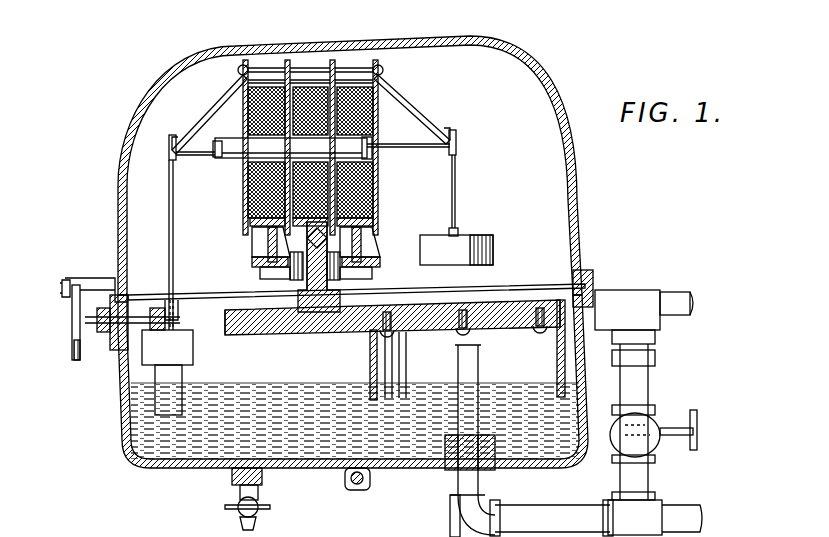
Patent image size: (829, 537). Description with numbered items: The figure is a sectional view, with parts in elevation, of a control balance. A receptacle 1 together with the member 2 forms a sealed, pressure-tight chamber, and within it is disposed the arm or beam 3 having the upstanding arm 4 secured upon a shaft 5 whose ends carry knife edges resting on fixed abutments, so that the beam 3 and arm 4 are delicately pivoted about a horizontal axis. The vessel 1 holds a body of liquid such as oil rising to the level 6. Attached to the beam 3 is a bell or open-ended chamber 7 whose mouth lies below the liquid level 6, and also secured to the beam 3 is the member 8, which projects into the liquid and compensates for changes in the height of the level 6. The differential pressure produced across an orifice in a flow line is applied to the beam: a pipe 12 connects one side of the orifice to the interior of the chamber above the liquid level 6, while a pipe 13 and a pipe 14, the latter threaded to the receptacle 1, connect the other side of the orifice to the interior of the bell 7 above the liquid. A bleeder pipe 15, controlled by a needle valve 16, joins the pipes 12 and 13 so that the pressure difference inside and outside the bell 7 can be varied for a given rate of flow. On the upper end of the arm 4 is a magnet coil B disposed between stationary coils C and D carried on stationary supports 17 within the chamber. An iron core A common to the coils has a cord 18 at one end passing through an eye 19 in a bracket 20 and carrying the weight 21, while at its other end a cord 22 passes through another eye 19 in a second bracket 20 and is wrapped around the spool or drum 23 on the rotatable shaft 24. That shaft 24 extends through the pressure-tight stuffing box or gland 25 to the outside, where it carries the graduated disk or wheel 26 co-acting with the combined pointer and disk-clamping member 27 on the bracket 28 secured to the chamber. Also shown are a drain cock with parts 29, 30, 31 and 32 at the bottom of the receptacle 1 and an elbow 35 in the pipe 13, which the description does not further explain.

The receptacle 1 is at (120, 406).
The member 2 is at (118, 187).
The arm or beam 3 is at (487, 305).
The upstanding arm 4 is at (268, 250).
The shaft 5 is at (355, 248).
The liquid level 6 is at (316, 336).
The bell or open-ended chamber 7 is at (370, 350).
The member 8 is at (188, 380).
The pipe 12 is at (675, 318).
The pipe 13 is at (484, 486).
The pipe 14 is at (480, 362).
The bleeder pipe 15 is at (650, 396).
The needle valve 16 is at (630, 440).
The stationary supports 17 is at (255, 261).
The cord 18 is at (385, 146).
The eye 19 is at (169, 152).
The bracket 20 is at (212, 108).
The weight 21 is at (494, 250).
The cord 22 is at (198, 158).
The spool or drum 23 is at (183, 312).
The rotatable shaft 24 is at (140, 300).
The stuffing box or gland 25 is at (110, 335).
The disk or wheel 26 is at (72, 340).
The index or pointer and disk-clamping member 27 is at (62, 292).
The bracket 28 is at (94, 278).
The drain cock 29 is at (272, 502).
The handle 30 is at (226, 521).
The plug 31 is at (292, 517).
The spout 32 is at (235, 527).
The elbow 35 is at (448, 530).
The core A is at (378, 153).
The magnet coil B is at (320, 90).
The stationary coil C is at (252, 121).
The stationary coil D is at (372, 198).